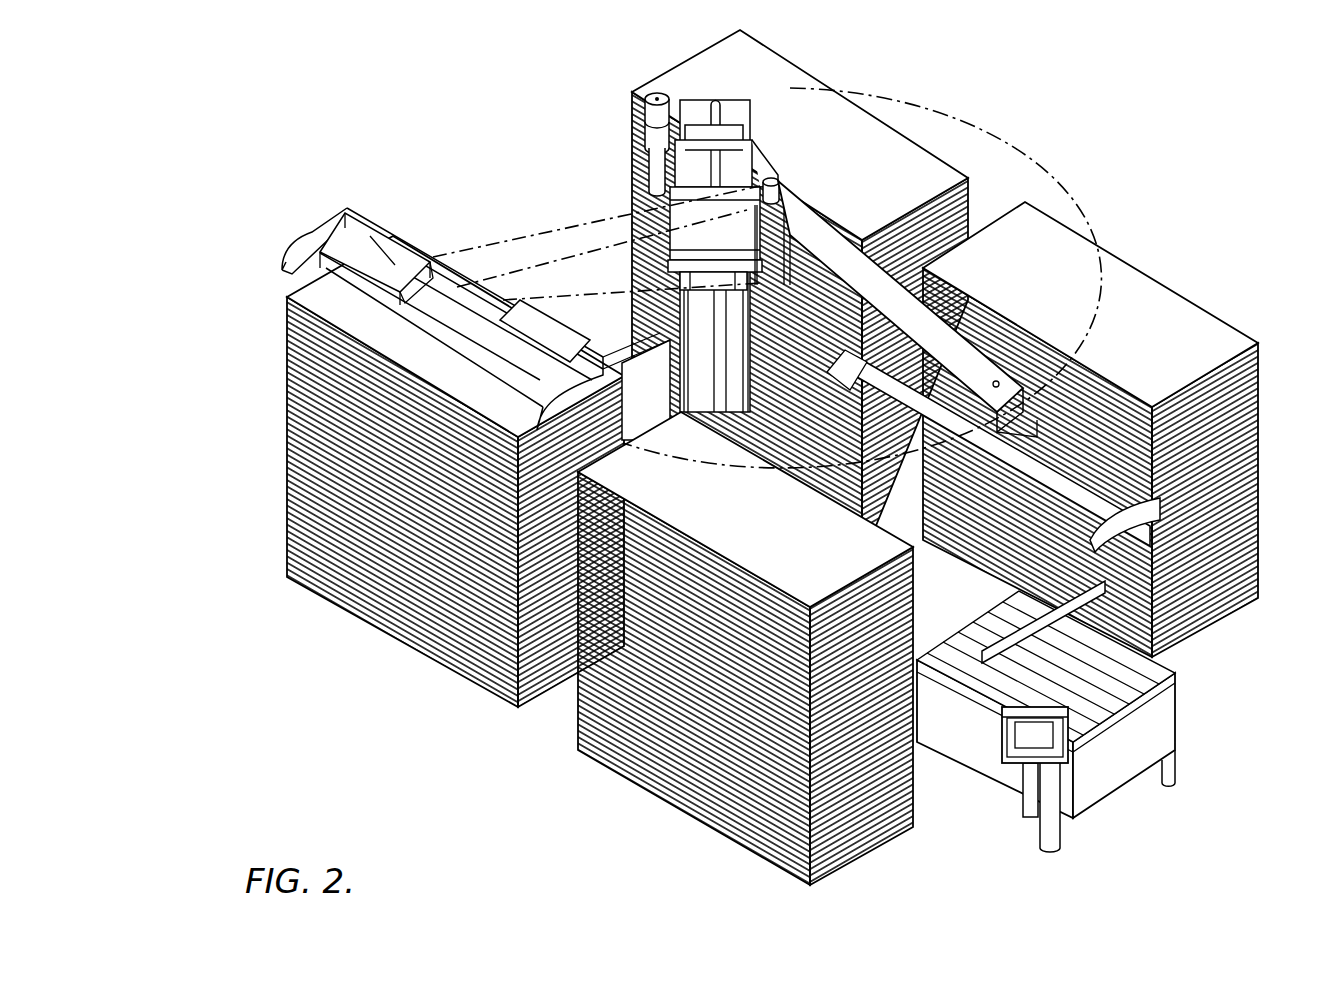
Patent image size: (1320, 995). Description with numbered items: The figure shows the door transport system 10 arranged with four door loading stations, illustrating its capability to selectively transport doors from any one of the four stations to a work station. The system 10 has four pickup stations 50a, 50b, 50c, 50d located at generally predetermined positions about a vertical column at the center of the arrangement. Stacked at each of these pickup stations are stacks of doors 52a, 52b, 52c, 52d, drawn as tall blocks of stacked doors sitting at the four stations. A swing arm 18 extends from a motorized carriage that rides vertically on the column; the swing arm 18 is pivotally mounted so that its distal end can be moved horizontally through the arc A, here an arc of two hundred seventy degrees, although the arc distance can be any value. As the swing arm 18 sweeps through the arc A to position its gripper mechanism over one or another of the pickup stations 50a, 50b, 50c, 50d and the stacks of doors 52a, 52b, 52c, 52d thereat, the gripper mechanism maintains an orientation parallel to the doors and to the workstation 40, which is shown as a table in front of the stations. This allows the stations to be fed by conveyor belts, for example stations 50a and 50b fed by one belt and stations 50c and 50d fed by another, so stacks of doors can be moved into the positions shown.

The transport system 10 is at (505, 185).
The swing arm 18 is at (904, 314).
The workstation 40 is at (1144, 796).
The pickup station 50a is at (352, 615).
The pickup station 50b is at (672, 802).
The pickup station 50c is at (1212, 648).
The pickup station 50d is at (834, 74).
The stack of doors 52a is at (285, 395).
The stack of doors 52b is at (575, 712).
The stack of doors 52c is at (1158, 280).
The stack of doors 52d is at (660, 82).
The arc A is at (1052, 150).